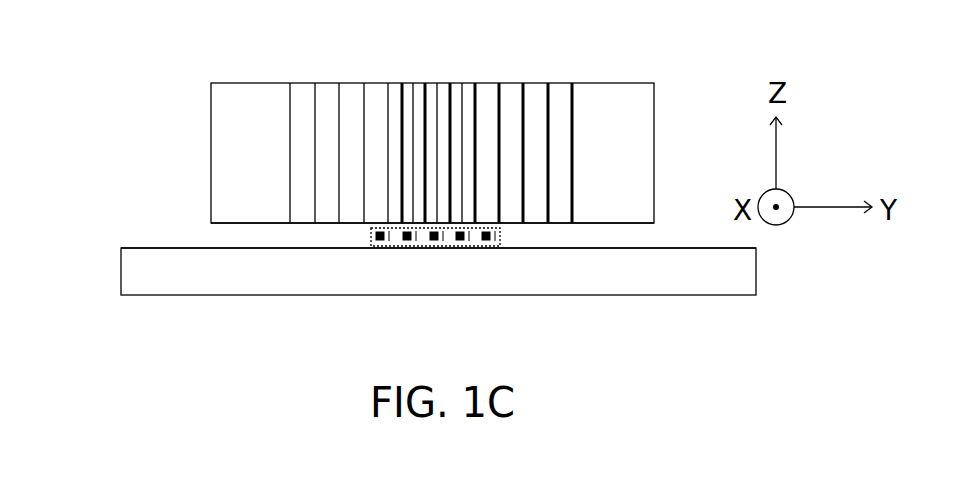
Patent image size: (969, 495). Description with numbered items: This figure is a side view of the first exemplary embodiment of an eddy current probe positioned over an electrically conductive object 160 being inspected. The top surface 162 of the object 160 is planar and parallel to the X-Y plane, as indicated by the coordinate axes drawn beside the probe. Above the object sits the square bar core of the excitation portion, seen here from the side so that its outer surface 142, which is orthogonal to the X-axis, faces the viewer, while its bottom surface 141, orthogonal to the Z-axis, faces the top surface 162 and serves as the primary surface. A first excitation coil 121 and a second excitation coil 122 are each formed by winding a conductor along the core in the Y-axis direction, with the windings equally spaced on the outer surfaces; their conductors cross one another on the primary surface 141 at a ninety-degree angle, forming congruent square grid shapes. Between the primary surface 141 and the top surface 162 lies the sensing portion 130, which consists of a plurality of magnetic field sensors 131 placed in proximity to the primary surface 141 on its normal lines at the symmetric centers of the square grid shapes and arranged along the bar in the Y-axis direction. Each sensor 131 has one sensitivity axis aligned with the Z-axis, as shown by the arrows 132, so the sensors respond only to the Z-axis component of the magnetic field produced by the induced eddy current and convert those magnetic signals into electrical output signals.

The first excitation coil 121 is at (287, 92).
The second excitation coil 122 is at (578, 90).
The sensing portion 130 is at (370, 233).
The magnetic field sensor 131 is at (437, 242).
The arrows 132 is at (497, 240).
The bottom surface 141 is at (233, 224).
The outer surface 142 is at (221, 94).
The object 160 is at (128, 289).
The top surface 162 is at (152, 247).